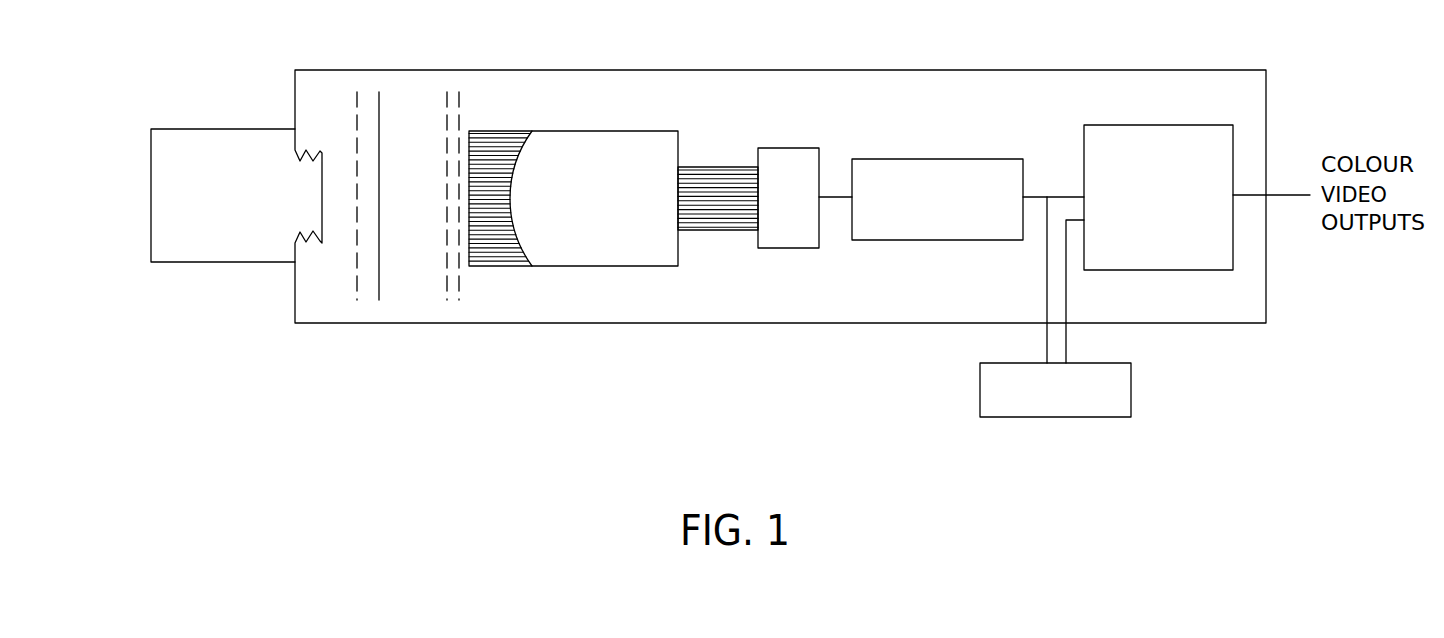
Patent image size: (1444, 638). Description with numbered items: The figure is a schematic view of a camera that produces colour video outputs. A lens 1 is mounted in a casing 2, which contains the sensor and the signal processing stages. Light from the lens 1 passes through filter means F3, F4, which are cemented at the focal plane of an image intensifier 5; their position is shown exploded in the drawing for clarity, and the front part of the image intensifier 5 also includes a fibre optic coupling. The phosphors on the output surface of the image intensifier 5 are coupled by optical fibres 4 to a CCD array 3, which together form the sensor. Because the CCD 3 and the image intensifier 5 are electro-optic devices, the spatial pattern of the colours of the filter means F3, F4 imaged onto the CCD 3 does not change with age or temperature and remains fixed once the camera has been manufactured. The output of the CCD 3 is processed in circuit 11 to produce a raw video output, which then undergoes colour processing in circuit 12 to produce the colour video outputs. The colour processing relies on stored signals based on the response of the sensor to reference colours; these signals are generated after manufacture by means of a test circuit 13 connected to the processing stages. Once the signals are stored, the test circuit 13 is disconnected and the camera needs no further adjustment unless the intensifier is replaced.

The lens 1 is at (197, 128).
The casing 2 is at (567, 70).
The filter means F3 is at (446, 100).
The filter means F4 is at (460, 101).
The image intensifier 5 is at (617, 131).
The optical fibres 4 is at (717, 167).
The CCD array 3 is at (783, 148).
The processing circuit 11 is at (933, 159).
The colour processing circuit 12 is at (1162, 125).
The test circuit 13 is at (1057, 417).